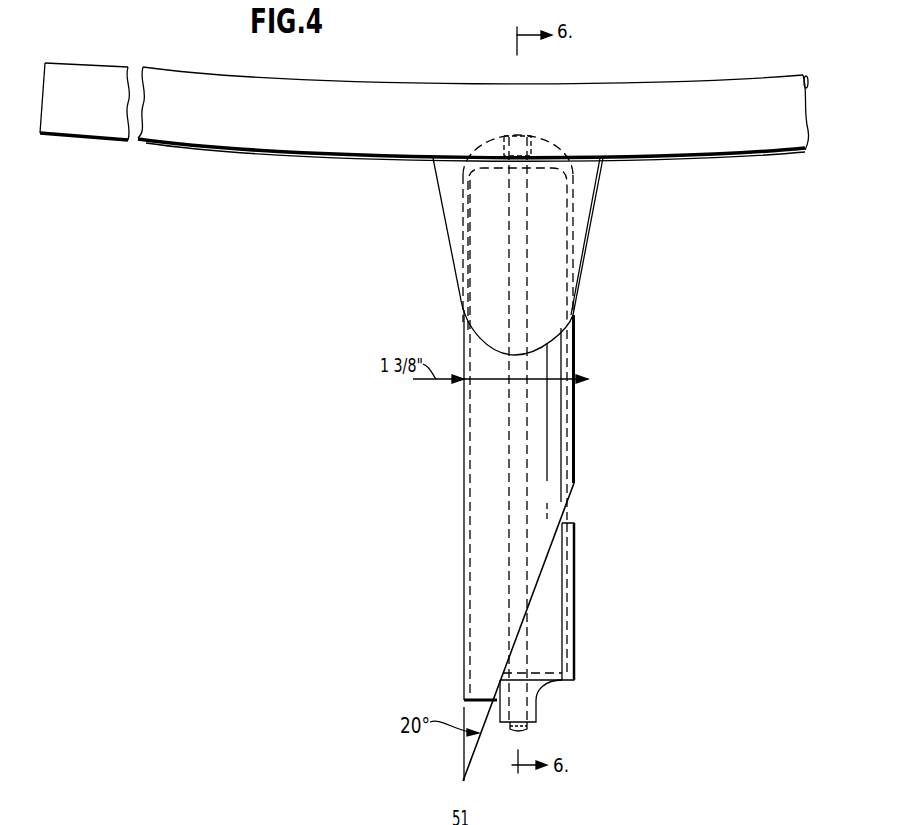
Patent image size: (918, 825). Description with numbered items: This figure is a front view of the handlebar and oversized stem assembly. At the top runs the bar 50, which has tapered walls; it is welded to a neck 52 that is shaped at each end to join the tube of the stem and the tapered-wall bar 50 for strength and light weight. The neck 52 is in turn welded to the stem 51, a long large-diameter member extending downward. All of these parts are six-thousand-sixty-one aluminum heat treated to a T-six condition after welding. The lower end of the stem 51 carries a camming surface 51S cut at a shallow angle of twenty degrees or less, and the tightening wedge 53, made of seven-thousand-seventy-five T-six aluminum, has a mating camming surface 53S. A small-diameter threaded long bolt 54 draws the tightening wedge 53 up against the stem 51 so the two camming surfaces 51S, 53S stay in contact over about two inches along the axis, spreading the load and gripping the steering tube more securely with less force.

The bar 50 is at (258, 140).
The stem 51 is at (464, 445).
The camming surface 51S is at (568, 502).
The neck 52 is at (452, 218).
The tightening wedge 53 is at (555, 642).
The camming surface 53S is at (520, 623).
The threaded long bolt 54 is at (507, 408).